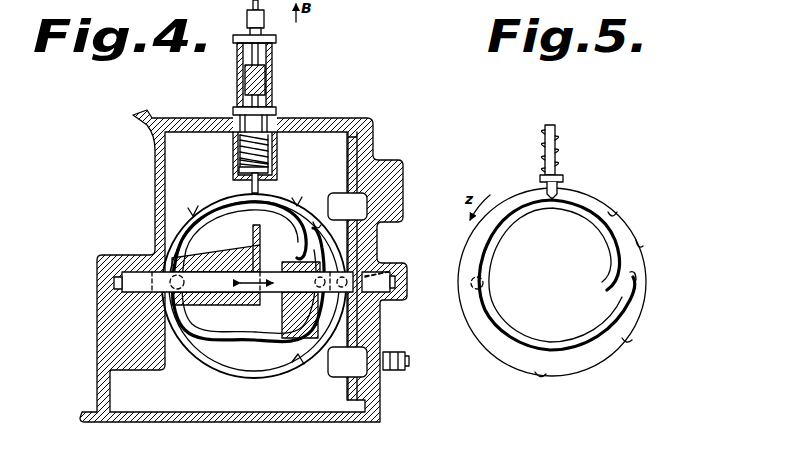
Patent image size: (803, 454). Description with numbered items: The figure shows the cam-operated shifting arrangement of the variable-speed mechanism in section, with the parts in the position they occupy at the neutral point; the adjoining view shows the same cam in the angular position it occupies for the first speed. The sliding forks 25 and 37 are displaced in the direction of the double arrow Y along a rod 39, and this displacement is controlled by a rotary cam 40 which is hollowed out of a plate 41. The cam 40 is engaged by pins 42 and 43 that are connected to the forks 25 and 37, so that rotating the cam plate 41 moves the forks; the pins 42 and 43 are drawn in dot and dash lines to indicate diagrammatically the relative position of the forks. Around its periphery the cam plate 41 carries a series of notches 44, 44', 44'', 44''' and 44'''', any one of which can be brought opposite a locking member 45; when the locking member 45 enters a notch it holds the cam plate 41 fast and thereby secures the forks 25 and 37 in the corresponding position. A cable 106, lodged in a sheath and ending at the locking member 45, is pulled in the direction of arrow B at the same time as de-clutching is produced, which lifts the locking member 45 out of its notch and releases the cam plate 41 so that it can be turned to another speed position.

In FIG. 4, the cable 106 is at (275, 40).
In FIG. 4, the locking member 45 is at (247, 178).
In FIG. 5, the locking member 45 is at (560, 170).
In FIG. 4, the notch 44 is at (148, 198).
In FIG. 5, the notch 44 is at (596, 172).
In FIG. 4, the notch 44' is at (305, 176).
In FIG. 5, the notch 44' is at (647, 203).
In FIG. 4, the notch 44'' is at (306, 197).
In FIG. 5, the notch 44'' is at (678, 245).
In FIG. 4, the notch 44''' is at (407, 262).
In FIG. 5, the notch 44''' is at (564, 306).
In FIG. 4, the notch 44'''' is at (319, 378).
In FIG. 5, the notch 44'''' is at (572, 390).
In FIG. 4, the sliding fork 25 is at (172, 258).
In FIG. 4, the rod 39 is at (272, 272).
In FIG. 4, the sliding fork 37 is at (277, 338).
In FIG. 4, the rotary cam 40 is at (208, 338).
In FIG. 5, the rotary cam 40 is at (497, 327).
In FIG. 4, the cam plate 41 is at (252, 374).
In FIG. 5, the cam plate 41 is at (510, 352).
In FIG. 4, the pin 42 is at (118, 310).
In FIG. 5, the pin 42 is at (483, 283).
In FIG. 4, the pin 43 is at (374, 257).
In FIG. 5, the pin 43 is at (630, 286).